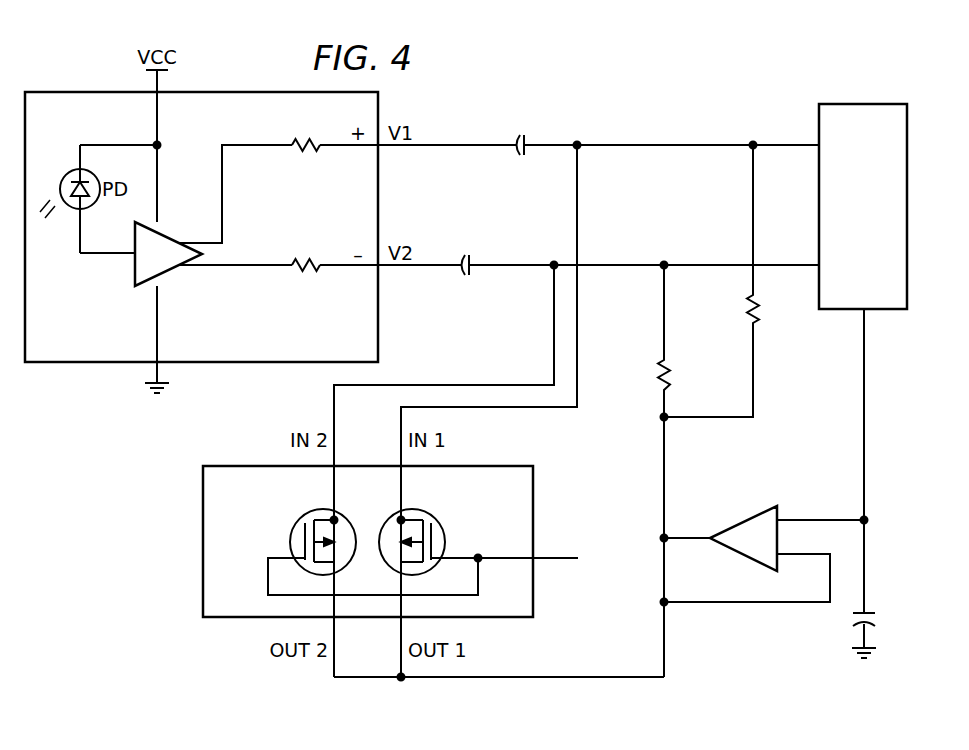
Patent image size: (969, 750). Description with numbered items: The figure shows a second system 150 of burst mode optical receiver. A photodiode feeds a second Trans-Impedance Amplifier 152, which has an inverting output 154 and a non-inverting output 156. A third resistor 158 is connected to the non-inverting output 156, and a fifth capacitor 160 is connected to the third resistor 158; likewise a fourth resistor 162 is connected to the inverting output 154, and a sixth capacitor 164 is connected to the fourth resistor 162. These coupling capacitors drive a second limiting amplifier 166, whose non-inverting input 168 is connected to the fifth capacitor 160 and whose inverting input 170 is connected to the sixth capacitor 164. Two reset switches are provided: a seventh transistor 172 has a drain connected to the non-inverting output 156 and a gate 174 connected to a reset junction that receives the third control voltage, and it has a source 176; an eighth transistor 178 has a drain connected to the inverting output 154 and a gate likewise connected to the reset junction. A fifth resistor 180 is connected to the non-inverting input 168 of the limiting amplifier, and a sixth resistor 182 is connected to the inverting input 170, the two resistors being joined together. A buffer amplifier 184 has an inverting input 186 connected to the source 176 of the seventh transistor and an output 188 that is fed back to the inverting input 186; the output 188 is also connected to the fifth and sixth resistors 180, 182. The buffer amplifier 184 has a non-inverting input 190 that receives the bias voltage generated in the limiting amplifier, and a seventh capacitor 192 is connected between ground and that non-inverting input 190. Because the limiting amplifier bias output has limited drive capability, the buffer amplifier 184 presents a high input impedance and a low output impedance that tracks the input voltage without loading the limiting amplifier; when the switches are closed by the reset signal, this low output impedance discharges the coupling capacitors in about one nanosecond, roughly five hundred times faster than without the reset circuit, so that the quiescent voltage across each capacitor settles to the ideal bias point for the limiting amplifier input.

The second system of burst mode optical receiver 150 is at (662, 88).
The second Trans-Impedance Amplifier 152 is at (168, 272).
The inverting output 154 is at (240, 268).
The non-inverting output 156 is at (246, 148).
The third resistor 158 is at (304, 150).
The fifth capacitor 160 is at (521, 158).
The fourth resistor 162 is at (304, 270).
The sixth capacitor 164 is at (466, 278).
The second limiting amplifier 166 is at (873, 104).
The non-inverting input 168 is at (706, 145).
The inverting input 170 is at (706, 265).
The seventh transistor 172 is at (292, 540).
The gate 174 is at (555, 560).
The source 176 is at (398, 680).
The eighth transistor 178 is at (443, 540).
The fifth resistor 180 is at (746, 307).
The sixth resistor 182 is at (657, 373).
The buffer amplifier 184 is at (742, 518).
The inverting input 186 is at (720, 604).
The output 188 is at (688, 540).
The non-inverting input 190 is at (860, 518).
The seventh capacitor 192 is at (853, 620).